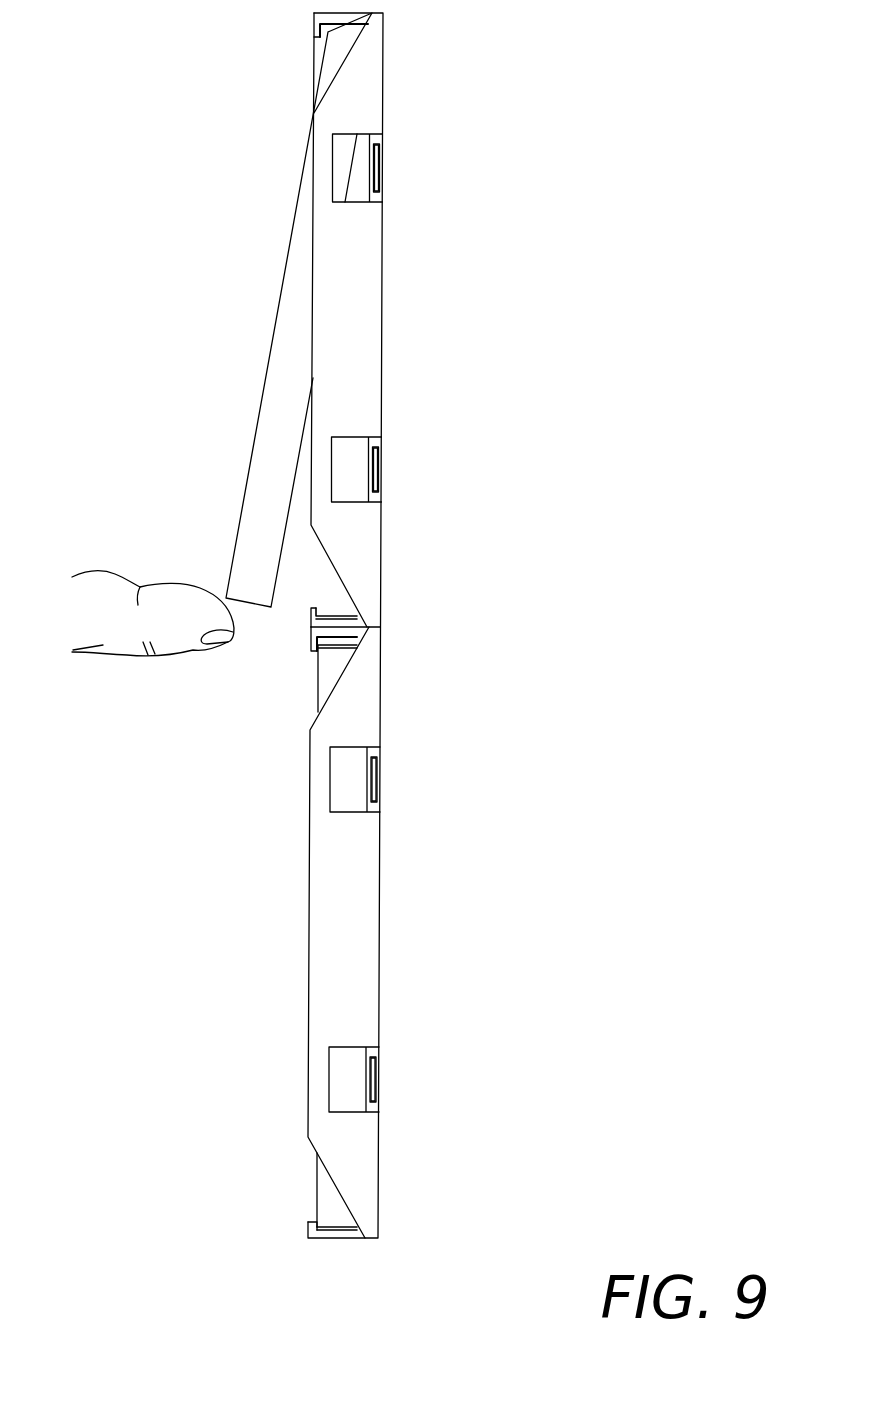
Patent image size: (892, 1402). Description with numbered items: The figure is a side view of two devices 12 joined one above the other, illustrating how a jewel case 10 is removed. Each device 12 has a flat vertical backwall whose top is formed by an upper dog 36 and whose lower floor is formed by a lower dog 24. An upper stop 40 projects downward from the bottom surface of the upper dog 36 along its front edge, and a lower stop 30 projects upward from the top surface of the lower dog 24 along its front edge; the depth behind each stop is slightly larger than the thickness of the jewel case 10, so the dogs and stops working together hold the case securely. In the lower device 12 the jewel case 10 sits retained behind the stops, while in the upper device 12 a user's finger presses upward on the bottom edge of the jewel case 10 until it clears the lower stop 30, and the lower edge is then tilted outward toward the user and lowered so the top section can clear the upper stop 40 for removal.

The jewel case 10 is at (263, 328).
The device 12 is at (388, 312).
The lower dog 24 is at (337, 617).
The lower stop 30 is at (311, 607).
The upper dog 36 is at (345, 20).
The upper stop 40 is at (314, 37).